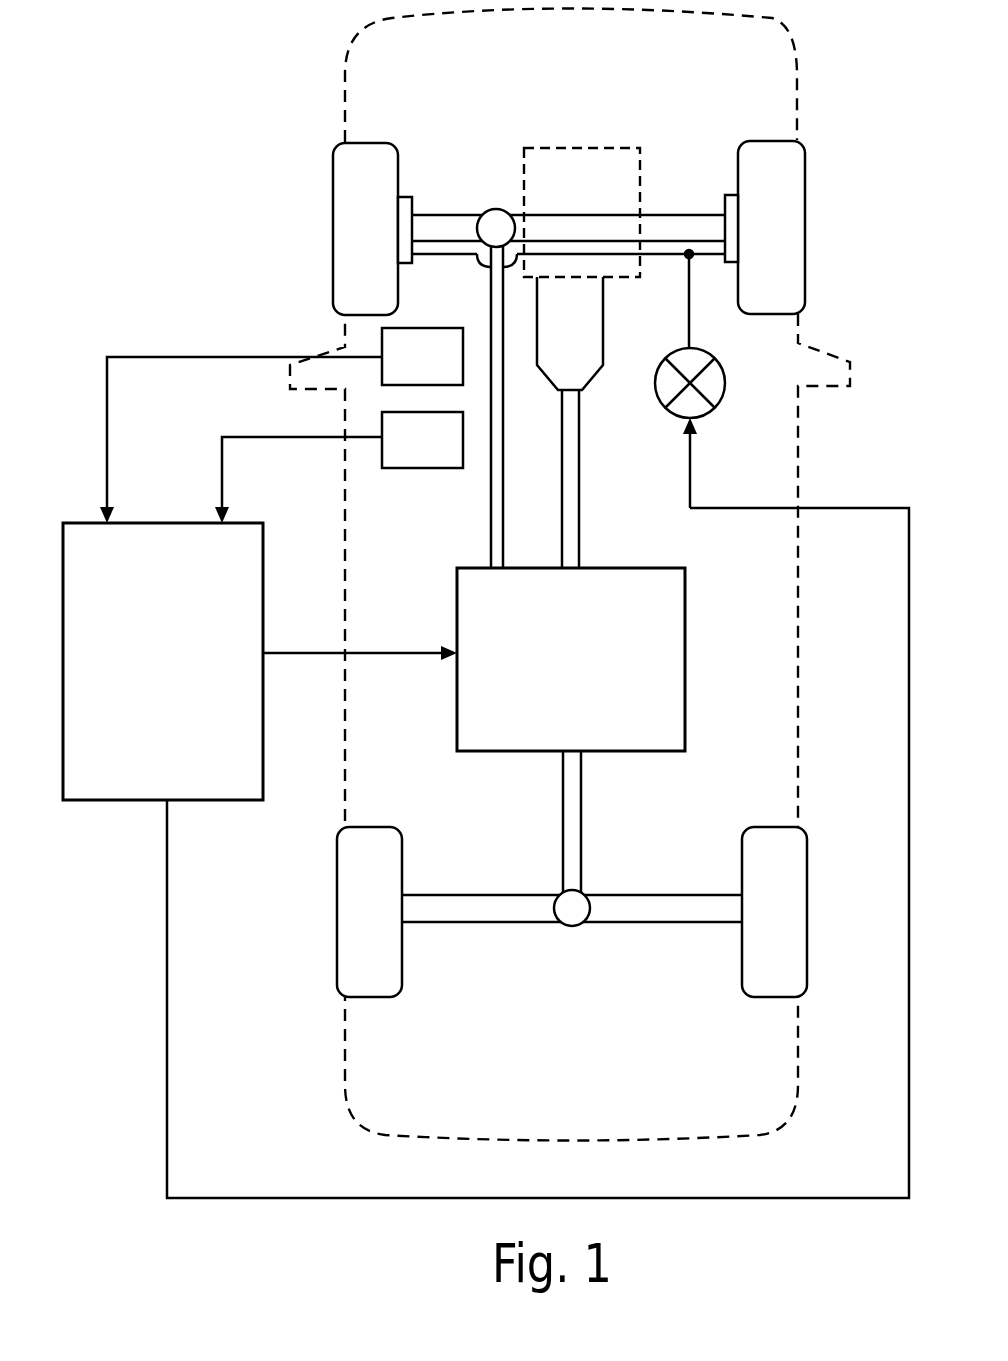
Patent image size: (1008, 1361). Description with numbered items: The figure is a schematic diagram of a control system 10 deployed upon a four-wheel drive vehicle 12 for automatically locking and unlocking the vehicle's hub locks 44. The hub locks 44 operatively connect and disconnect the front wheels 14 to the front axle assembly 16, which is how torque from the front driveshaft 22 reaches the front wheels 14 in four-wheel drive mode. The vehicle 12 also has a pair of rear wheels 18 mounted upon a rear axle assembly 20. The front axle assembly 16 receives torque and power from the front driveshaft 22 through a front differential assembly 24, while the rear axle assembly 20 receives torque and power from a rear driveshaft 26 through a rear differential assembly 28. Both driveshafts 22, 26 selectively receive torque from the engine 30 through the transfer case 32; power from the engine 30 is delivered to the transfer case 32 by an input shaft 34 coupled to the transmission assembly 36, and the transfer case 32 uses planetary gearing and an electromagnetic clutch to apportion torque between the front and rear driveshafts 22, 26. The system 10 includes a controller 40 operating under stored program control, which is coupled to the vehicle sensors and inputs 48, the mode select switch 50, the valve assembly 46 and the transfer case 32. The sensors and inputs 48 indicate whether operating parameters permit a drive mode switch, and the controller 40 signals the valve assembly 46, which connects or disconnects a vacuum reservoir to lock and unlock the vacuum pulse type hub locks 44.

The control system 10 is at (236, 259).
The four-wheel drive vehicle 12 is at (340, 100).
The front wheels 14 is at (347, 240).
The front axle assembly 16 is at (451, 214).
The rear wheels 18 is at (351, 923).
The rear axle assembly 20 is at (707, 922).
The front driveshaft 22 is at (491, 517).
The front differential assembly 24 is at (497, 209).
The rear driveshaft 26 is at (581, 783).
The rear differential assembly 28 is at (572, 926).
The engine 30 is at (565, 196).
The transfer case 32 is at (554, 671).
The input shaft 34 is at (576, 501).
The transmission assembly 36 is at (553, 339).
The controller 40 is at (138, 676).
The hub locks 44 is at (400, 205).
The valve assembly 46 is at (718, 395).
The vehicle sensors and inputs 48 is at (404, 458).
The mode select switch 50 is at (404, 374).